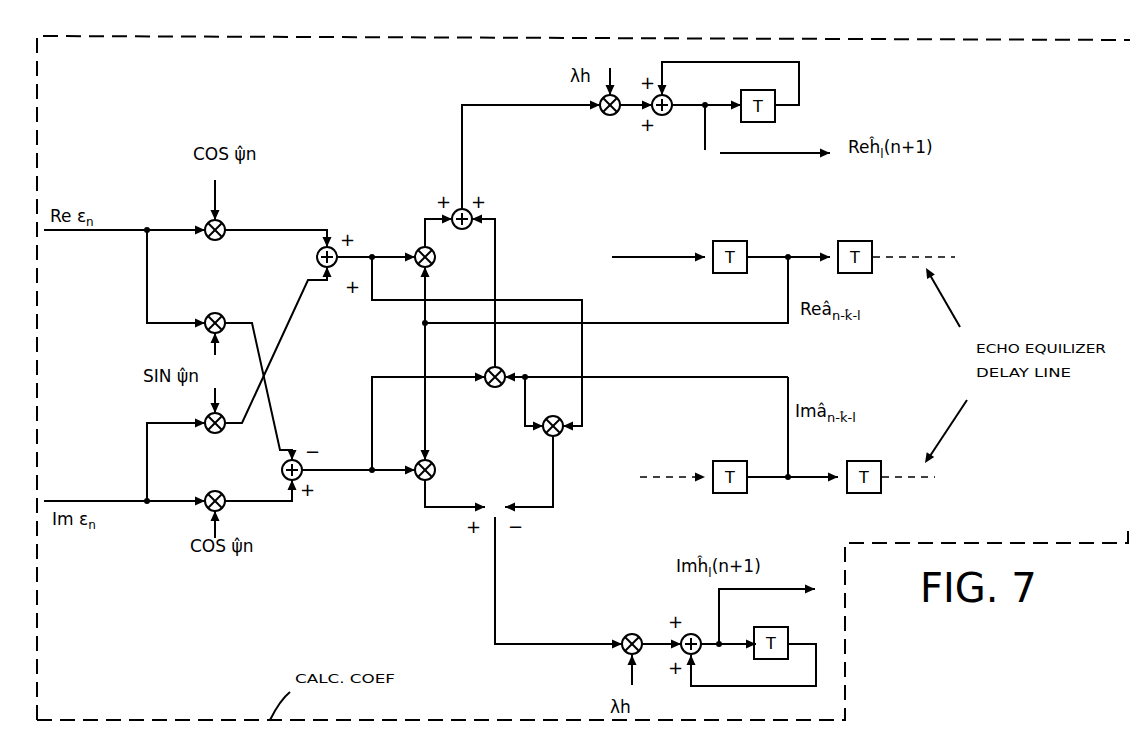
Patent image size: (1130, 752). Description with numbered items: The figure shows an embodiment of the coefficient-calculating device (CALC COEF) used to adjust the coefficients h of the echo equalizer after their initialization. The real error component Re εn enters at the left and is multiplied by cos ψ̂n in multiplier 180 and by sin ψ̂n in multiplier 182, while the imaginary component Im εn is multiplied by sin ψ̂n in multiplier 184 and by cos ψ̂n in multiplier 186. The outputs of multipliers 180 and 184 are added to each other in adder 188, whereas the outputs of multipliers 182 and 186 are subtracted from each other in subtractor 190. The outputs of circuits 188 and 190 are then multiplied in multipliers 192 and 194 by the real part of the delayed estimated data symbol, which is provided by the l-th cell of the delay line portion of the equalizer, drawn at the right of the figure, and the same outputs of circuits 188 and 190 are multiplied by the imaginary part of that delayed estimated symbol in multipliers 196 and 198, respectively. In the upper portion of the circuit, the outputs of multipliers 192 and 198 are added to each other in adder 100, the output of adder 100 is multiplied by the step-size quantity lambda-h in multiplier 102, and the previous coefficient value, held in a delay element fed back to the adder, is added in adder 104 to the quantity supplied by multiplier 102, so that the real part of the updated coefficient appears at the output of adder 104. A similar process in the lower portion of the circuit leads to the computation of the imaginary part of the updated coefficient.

The multiplier 180 is at (224, 239).
The multiplier 182 is at (223, 315).
The multiplier 184 is at (222, 432).
The multiplier 186 is at (222, 492).
The adder 188 is at (335, 265).
The subtractor 190 is at (299, 462).
The multiplier 192 is at (435, 257).
The multiplier 194 is at (433, 463).
The multiplier 196 is at (562, 434).
The multiplier 198 is at (503, 369).
The adder 100 is at (468, 210).
The multiplier 102 is at (604, 114).
The adder 104 is at (670, 97).